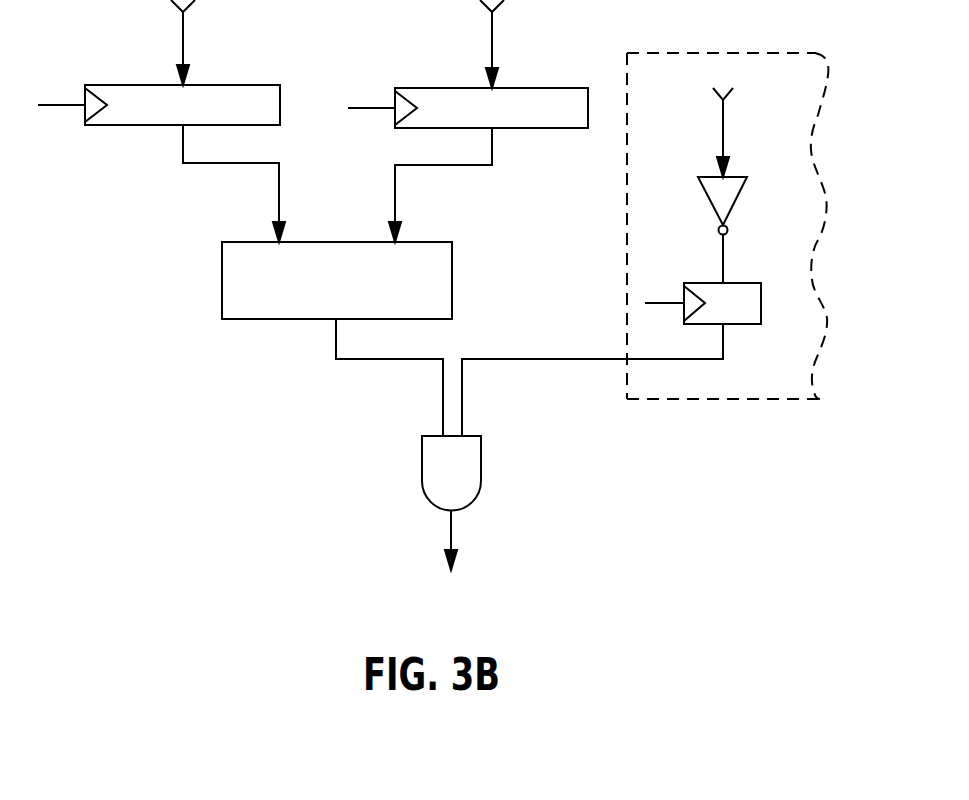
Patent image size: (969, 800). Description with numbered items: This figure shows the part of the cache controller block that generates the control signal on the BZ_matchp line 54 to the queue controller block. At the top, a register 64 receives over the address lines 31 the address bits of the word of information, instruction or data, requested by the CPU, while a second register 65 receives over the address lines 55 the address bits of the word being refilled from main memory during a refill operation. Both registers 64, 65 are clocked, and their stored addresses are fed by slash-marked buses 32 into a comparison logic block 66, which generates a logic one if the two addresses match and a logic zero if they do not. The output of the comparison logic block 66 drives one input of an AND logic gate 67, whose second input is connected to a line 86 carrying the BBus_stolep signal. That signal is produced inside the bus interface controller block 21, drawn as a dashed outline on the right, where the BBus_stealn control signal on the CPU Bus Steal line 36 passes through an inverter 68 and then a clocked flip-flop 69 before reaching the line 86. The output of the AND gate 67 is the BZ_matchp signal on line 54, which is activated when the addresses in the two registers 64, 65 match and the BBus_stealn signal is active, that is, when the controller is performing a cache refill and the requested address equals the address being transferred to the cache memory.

The register 64 is at (167, 119).
The address lines 31 is at (183, 50).
The second register 65 is at (476, 122).
The address lines 55 is at (492, 50).
The register output bus 32 is at (227, 153).
The comparison logic block 66 is at (321, 296).
The line 86 is at (548, 359).
The AND logic gate 67 is at (435, 487).
The BZ_matchp line 54 is at (452, 530).
The bus interface controller block 21 is at (807, 396).
The CPU Bus Steal line 36 is at (723, 138).
The inverter 68 is at (735, 205).
The flip-flop 69 is at (722, 317).